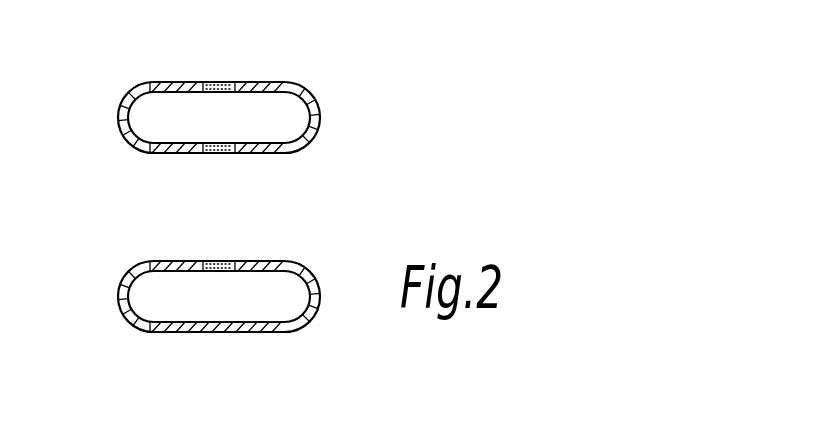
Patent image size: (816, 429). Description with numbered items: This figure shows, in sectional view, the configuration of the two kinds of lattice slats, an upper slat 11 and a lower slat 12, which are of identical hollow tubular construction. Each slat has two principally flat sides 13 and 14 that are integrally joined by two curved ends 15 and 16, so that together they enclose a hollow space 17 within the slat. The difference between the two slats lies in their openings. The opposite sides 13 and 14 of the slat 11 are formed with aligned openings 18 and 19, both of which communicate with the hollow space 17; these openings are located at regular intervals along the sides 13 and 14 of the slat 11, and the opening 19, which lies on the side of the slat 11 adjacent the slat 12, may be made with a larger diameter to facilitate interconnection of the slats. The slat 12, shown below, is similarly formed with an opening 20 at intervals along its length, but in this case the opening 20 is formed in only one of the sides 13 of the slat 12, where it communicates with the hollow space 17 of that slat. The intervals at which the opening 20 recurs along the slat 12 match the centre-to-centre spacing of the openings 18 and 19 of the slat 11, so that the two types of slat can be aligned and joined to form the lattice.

The slat 11 is at (312, 72).
The slat 12 is at (325, 255).
The flat side 13 is at (158, 82).
The flat side 14 is at (147, 153).
The curved end 15 is at (118, 115).
The curved end 16 is at (322, 119).
The hollow space 17 is at (293, 122).
The opening 18 is at (214, 83).
The opening 19 is at (218, 153).
The opening 20 is at (215, 262).